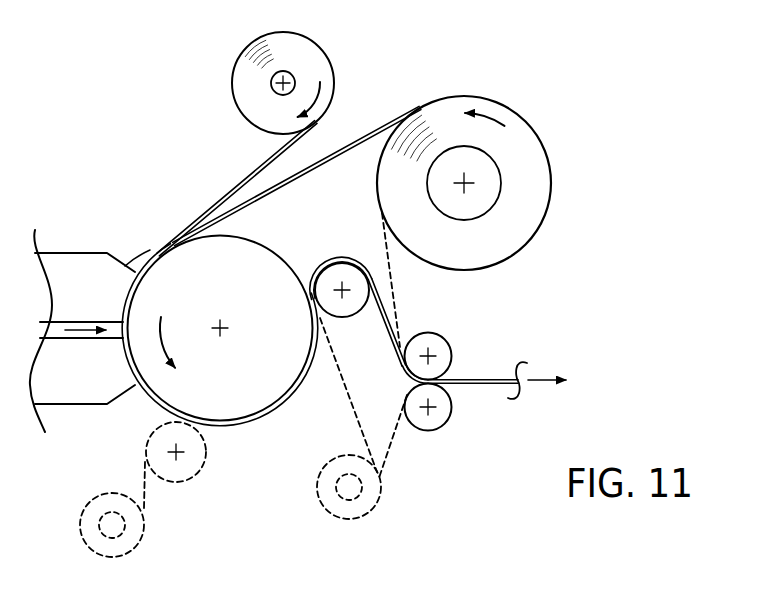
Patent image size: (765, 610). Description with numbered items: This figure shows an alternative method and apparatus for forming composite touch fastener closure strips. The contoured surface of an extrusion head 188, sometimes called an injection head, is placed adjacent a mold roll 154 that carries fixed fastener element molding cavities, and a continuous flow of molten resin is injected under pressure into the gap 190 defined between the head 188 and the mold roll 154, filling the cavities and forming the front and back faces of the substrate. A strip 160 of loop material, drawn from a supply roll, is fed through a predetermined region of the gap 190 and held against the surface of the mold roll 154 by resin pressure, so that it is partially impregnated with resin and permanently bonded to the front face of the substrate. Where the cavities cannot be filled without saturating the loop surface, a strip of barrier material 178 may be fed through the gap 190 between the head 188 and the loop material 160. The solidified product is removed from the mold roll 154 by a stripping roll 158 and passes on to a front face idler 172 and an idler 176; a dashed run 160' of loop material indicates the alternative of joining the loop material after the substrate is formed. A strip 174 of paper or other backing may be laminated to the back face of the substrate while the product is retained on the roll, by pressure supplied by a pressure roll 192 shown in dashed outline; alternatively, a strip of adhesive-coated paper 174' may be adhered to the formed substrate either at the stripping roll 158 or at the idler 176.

The mold roll 154 is at (239, 381).
The stripper roll 158 is at (352, 316).
The strip of loop material 160 is at (362, 183).
The run of loop material 160' is at (426, 280).
The front face idler 172 is at (441, 343).
The strip of paper 174 is at (148, 509).
The adhesive-coated paper 174' is at (362, 418).
The idler 176 is at (440, 430).
The strip of barrier material 178 is at (238, 186).
The extrusion head 188 is at (82, 331).
The gap 190 is at (141, 261).
The pressure roll 192 is at (203, 460).